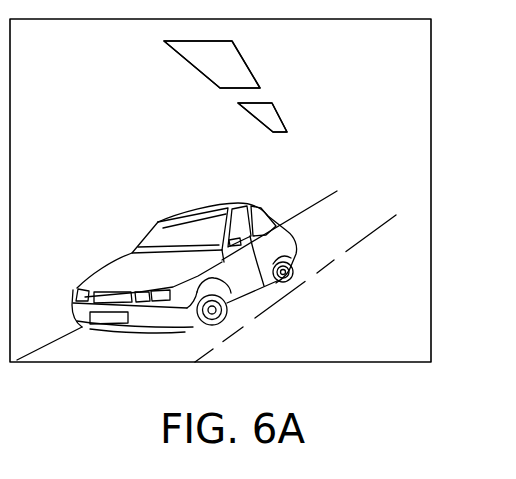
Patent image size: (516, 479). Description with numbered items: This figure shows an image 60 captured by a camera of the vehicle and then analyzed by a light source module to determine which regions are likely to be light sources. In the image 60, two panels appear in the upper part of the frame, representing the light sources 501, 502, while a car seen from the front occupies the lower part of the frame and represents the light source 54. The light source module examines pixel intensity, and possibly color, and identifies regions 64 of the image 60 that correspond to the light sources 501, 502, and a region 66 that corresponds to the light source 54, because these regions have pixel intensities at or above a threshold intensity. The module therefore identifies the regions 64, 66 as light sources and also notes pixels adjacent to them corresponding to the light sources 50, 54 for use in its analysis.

The image 60 is at (433, 150).
The light sources 50 is at (259, 84).
The light source 501 is at (246, 62).
The light source 502 is at (280, 117).
The regions 64 is at (187, 61).
The light source 54 is at (73, 300).
The region 66 is at (80, 292).